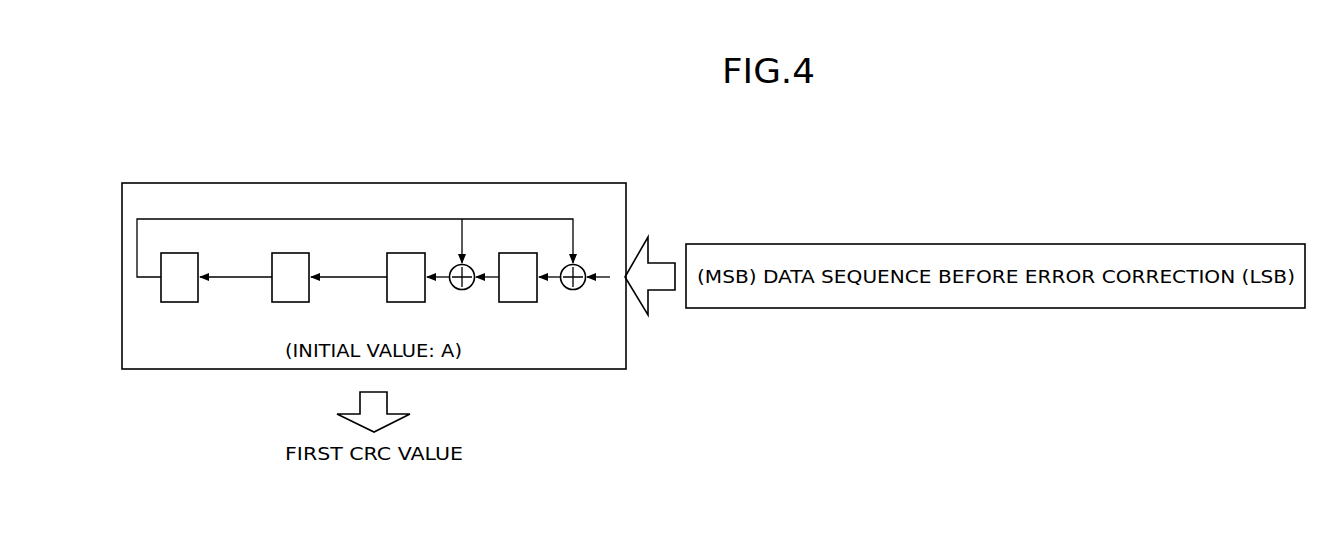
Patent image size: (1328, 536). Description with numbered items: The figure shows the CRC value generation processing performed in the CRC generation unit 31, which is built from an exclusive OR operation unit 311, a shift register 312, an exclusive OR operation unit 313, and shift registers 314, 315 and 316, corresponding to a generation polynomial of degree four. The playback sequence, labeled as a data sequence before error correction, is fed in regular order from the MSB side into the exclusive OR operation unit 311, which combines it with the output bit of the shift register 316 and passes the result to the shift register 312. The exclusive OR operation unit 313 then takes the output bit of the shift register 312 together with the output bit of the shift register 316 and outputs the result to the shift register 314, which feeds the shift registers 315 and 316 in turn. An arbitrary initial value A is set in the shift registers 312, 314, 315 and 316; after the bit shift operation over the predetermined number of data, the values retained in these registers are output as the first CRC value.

The CRC generation unit 31 is at (553, 187).
The exclusive OR operation unit 311 is at (576, 290).
The shift register 312 is at (516, 253).
The exclusive OR operation unit 313 is at (465, 290).
The shift register 314 is at (400, 253).
The shift register 315 is at (285, 253).
The shift register 316 is at (174, 253).